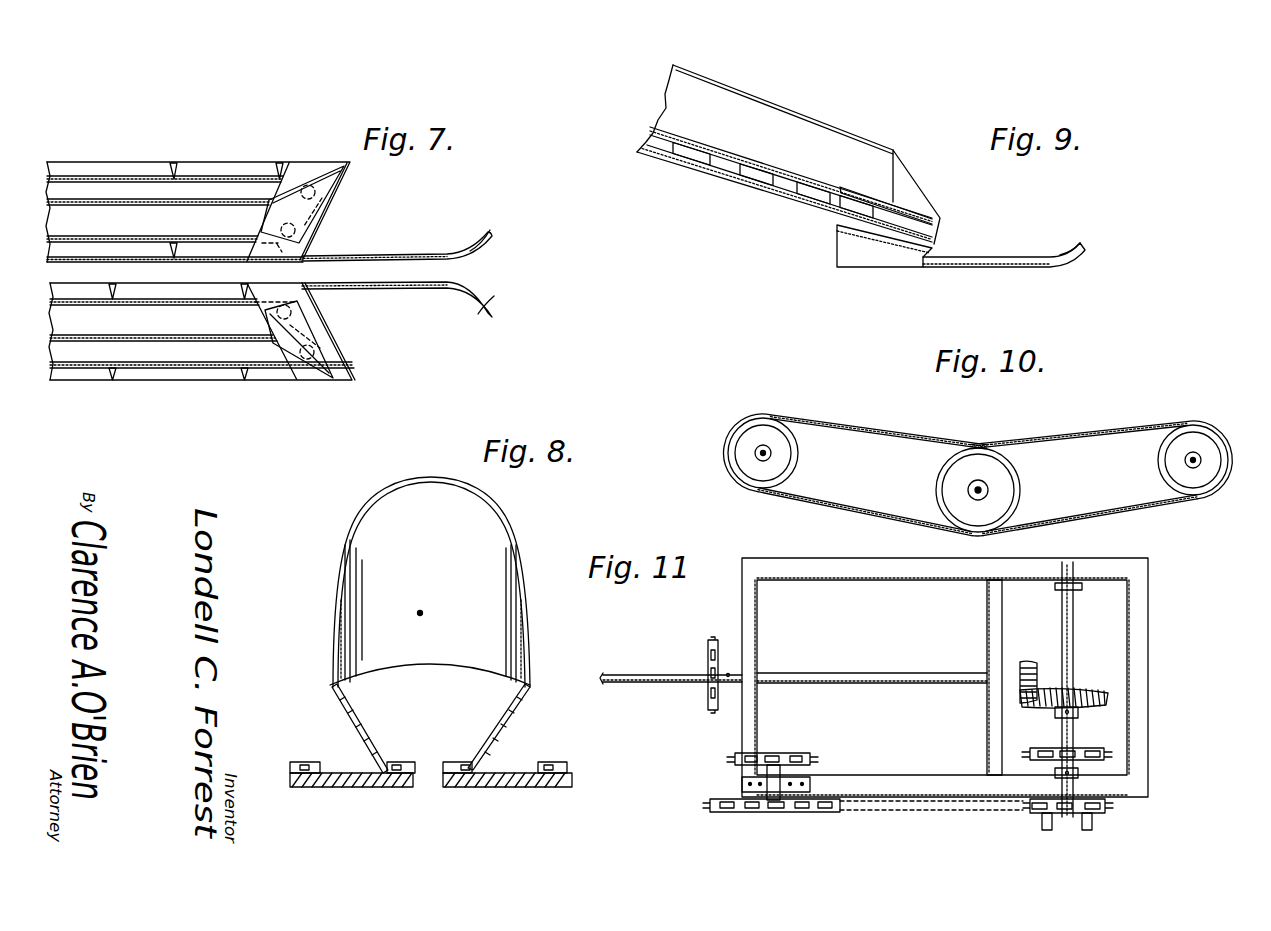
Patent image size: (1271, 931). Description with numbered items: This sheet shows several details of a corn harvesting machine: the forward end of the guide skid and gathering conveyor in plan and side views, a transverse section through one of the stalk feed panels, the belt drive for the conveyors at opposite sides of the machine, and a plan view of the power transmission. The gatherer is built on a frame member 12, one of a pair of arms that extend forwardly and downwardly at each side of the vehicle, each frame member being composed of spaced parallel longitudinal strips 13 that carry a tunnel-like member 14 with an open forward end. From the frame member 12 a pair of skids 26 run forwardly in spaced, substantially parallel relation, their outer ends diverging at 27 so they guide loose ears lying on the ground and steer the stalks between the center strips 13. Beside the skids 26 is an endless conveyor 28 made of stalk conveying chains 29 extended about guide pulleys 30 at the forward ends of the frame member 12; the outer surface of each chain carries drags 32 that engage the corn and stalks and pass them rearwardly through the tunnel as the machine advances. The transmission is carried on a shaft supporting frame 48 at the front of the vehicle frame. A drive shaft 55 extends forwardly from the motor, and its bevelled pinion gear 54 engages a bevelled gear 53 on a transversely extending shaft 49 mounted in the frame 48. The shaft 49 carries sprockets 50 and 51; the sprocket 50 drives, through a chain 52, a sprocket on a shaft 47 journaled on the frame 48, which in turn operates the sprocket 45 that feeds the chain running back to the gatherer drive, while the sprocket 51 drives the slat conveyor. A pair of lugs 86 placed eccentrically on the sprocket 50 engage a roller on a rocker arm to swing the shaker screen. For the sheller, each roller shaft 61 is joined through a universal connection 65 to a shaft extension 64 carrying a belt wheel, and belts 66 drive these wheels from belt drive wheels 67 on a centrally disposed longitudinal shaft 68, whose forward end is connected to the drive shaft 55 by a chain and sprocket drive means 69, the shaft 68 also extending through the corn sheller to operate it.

In FIG. 7, the frame member 12 is at (224, 163).
In FIG. 9, the frame member 12 is at (807, 203).
In FIG. 8, the frame member 12 is at (537, 787).
In FIG. 7, the strips 13 is at (127, 254).
In FIG. 8, the strips 13 is at (323, 787).
In FIG. 8, the tunnel-like member 14 is at (493, 637).
In FIG. 7, the skids 26 is at (390, 290).
In FIG. 9, the skids 26 is at (987, 270).
In FIG. 7, the diverging outer ends 27 is at (470, 253).
In FIG. 9, the diverging outer ends 27 is at (1080, 247).
In FIG. 7, the endless conveyor 28 is at (83, 176).
In FIG. 9, the endless conveyor 28 is at (740, 173).
In FIG. 8, the endless conveyor 28 is at (470, 763).
In FIG. 7, the stalk conveying chains 29 is at (270, 368).
In FIG. 7, the guide pulleys 30 is at (330, 213).
In FIG. 7, the drags 32 is at (172, 176).
In FIG. 8, the drags 32 is at (420, 773).
In FIG. 11, the sprocket 45 is at (785, 757).
In FIG. 11, the shaft 47 is at (797, 773).
In FIG. 11, the shaft supporting frame 48 is at (745, 722).
In FIG. 11, the transversely extending shaft 49 is at (1075, 640).
In FIG. 11, the sprocket 50 is at (1078, 817).
In FIG. 11, the sprocket 51 is at (1090, 752).
In FIG. 11, the chain 52 is at (950, 810).
In FIG. 11, the bevelled gear 53 is at (1087, 690).
In FIG. 11, the bevelled pinion gear 54 is at (1027, 663).
In FIG. 11, the drive shaft 55 is at (863, 678).
In FIG. 10, the roller shaft 61 is at (1195, 460).
In FIG. 10, the shaft extension 64 is at (760, 455).
In FIG. 10, the universal connection 65 is at (787, 467).
In FIG. 10, the belts 66 is at (953, 447).
In FIG. 10, the belt drive wheels 67 is at (1020, 495).
In FIG. 10, the longitudinally extending shaft 68 is at (977, 493).
In FIG. 11, the chain and sprocket drive means 69 is at (708, 693).
In FIG. 11, the lugs 86 is at (1038, 827).